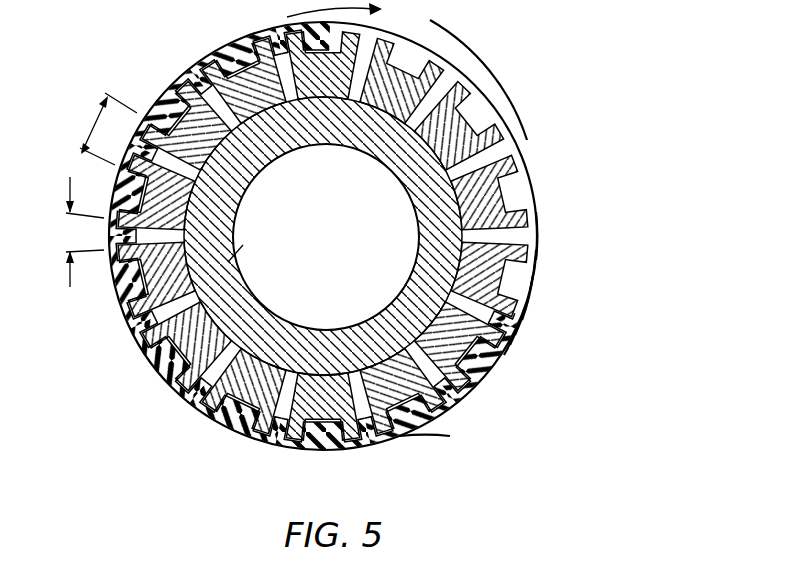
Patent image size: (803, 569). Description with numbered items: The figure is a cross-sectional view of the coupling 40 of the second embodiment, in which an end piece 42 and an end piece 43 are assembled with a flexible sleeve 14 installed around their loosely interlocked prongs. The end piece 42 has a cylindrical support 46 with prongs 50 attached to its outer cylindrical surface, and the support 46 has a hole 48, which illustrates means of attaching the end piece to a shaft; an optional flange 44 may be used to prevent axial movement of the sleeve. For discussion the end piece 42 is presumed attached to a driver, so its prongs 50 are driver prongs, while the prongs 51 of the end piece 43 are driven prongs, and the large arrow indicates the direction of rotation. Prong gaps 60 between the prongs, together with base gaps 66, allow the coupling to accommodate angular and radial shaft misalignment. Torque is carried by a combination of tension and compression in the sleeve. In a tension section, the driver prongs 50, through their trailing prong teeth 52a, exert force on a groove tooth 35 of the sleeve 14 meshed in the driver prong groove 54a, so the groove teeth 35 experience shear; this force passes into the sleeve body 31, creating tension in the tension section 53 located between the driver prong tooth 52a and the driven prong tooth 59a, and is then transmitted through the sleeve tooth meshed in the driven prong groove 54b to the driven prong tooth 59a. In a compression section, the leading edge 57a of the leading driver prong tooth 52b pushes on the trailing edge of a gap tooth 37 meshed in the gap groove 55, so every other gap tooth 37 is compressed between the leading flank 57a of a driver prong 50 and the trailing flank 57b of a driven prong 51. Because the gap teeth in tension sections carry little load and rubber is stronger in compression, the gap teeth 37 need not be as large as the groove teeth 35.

The flexible sleeve 14 is at (430, 427).
The sleeve body 31 is at (210, 412).
The groove tooth 35 is at (247, 430).
The gap tooth 37 is at (267, 437).
The coupling 40 is at (652, 86).
The end piece 42 is at (377, 133).
The end piece 43 is at (412, 64).
The flange 44 is at (492, 102).
The cylindrical support 46 is at (420, 273).
The hole 48 is at (133, 302).
The prongs 50 is at (180, 97).
The prongs 51 is at (256, 87).
The trailing prong tooth 52a is at (540, 265).
The leading driver prong tooth 52b is at (527, 310).
The tension section 53 is at (540, 230).
The driver prong groove 54a is at (522, 304).
The driven prong groove 54b is at (513, 187).
The gap groove 55 is at (523, 335).
The leading edge 57a is at (522, 333).
The trailing flank 57b is at (522, 337).
The driven prong tooth 59a is at (526, 237).
The prong gap 60 is at (487, 160).
The base gaps 66 is at (330, 350).